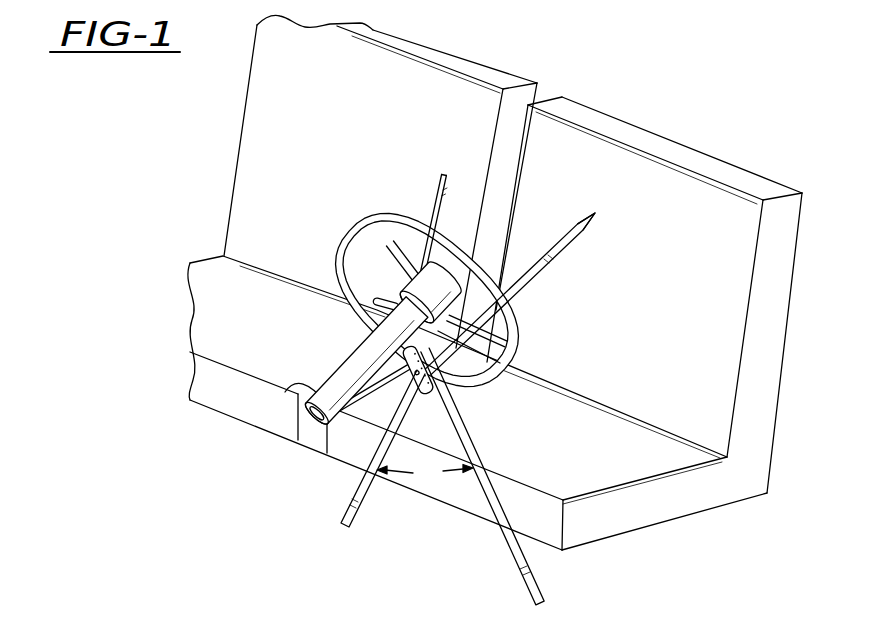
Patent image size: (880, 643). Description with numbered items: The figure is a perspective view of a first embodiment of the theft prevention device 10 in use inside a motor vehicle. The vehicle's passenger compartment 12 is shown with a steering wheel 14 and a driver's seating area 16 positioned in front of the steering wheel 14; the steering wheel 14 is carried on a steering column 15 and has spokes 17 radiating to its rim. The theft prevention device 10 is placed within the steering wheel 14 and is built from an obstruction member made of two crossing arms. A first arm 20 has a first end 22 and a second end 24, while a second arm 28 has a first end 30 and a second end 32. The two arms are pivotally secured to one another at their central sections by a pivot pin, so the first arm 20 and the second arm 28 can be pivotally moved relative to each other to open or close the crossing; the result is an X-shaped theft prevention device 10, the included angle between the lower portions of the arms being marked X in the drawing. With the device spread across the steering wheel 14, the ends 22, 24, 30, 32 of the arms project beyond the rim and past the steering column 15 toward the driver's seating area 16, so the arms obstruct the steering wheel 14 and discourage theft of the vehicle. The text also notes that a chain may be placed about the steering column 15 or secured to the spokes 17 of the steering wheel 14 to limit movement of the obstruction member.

The theft prevention device 10 is at (395, 197).
The passenger compartment 12 is at (665, 116).
The steering wheel 14 is at (338, 240).
The steering column 15 is at (283, 385).
The driver's seating area 16 is at (718, 403).
The spokes 17 is at (403, 272).
The first arm 20 is at (600, 212).
The first end 22 is at (596, 212).
The second end 24 is at (345, 522).
The second arm 28 is at (437, 183).
The first end 30 is at (445, 175).
The second end 32 is at (543, 603).
The angle X is at (425, 474).